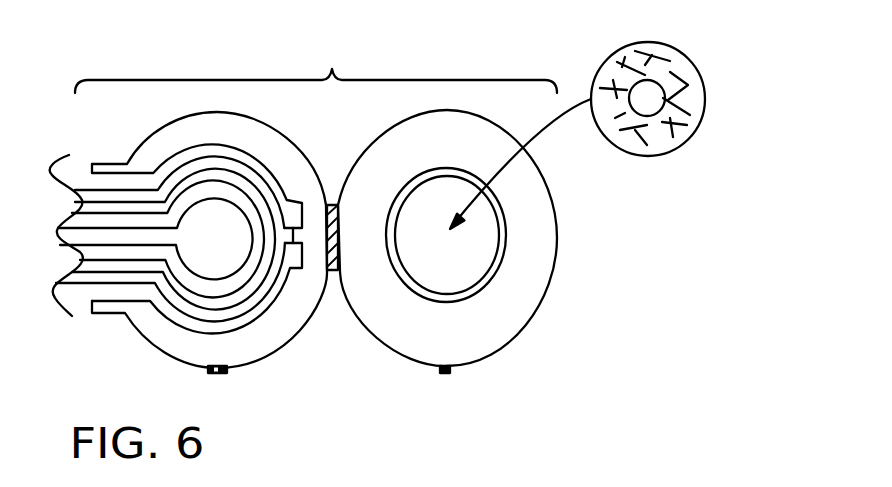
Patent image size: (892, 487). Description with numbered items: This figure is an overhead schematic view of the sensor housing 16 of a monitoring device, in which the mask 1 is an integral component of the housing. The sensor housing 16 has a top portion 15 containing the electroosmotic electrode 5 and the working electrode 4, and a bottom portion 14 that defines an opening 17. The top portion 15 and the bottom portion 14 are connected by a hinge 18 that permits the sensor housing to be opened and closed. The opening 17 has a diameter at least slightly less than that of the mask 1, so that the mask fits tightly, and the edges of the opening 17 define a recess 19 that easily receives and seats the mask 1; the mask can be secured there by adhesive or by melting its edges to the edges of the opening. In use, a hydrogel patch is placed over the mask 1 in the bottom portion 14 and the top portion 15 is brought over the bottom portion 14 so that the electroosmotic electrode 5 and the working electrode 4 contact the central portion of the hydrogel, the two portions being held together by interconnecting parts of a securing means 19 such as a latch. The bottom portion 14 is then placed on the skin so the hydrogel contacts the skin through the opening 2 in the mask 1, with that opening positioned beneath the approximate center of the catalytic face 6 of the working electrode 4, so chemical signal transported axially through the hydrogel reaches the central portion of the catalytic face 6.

The mask 1 is at (696, 127).
The opening 2 is at (660, 78).
The working electrode 4 is at (203, 238).
The electroosmotic electrode 5 is at (252, 157).
The catalytic face 6 is at (203, 218).
The bottom portion 14 is at (507, 325).
The top portion 15 is at (242, 348).
The sensor housing 16 is at (316, 64).
The opening 17 is at (484, 217).
The hinge 18 is at (332, 272).
The recess 19 is at (507, 250).